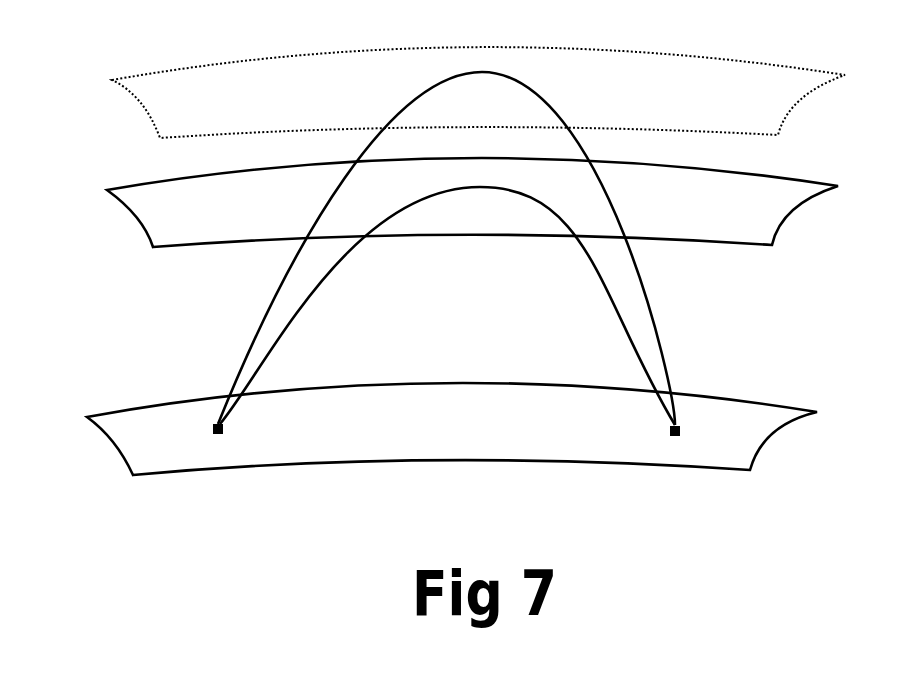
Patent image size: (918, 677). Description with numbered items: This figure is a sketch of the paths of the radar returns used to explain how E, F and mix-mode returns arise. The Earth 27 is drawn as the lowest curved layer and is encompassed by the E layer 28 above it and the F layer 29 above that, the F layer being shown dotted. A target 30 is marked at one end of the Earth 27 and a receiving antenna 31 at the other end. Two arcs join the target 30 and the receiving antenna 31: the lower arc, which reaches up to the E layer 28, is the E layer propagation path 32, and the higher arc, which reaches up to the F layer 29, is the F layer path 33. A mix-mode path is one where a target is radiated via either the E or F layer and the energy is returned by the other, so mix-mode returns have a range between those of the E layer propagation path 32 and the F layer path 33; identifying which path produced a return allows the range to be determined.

The Earth 27 is at (210, 470).
The E layer 28 is at (211, 247).
The F layer 29 is at (203, 137).
The target 30 is at (215, 423).
The receiving antenna 31 is at (682, 422).
The E layer propagation path 32 is at (305, 300).
The F layer path 33 is at (647, 298).